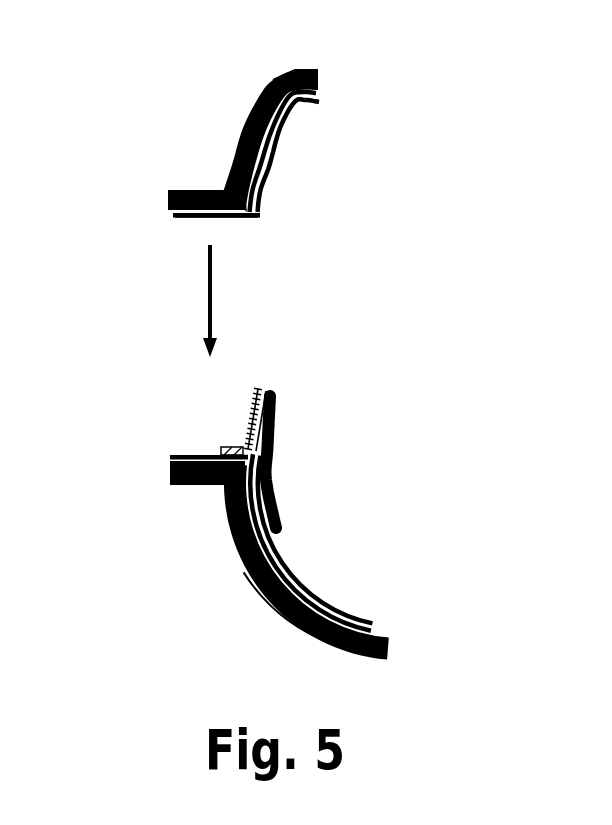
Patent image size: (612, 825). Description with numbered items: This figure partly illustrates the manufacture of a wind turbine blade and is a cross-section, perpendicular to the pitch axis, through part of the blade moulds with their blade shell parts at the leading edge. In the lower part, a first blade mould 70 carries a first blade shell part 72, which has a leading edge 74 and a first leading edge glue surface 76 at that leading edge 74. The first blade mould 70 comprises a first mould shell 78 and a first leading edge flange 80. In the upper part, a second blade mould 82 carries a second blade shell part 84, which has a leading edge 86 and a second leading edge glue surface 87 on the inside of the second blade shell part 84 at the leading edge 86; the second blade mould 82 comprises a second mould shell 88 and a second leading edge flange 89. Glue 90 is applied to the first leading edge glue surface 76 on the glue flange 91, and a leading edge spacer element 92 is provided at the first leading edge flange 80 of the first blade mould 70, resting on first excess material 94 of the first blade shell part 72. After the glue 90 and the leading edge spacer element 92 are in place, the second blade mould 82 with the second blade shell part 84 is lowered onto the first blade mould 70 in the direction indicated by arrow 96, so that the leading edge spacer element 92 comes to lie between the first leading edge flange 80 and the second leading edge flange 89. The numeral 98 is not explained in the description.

The first blade mould 70 is at (248, 575).
The first blade shell part 72 is at (299, 592).
The leading edge 74 is at (243, 449).
The first leading edge glue surface 76 is at (261, 392).
The first mould shell 78 is at (312, 639).
The first leading edge flange 80 is at (184, 487).
The second blade mould 82 is at (246, 124).
The second blade shell part 84 is at (270, 140).
The leading edge 86 is at (257, 216).
The second leading edge glue surface 87 is at (262, 186).
The second mould shell 88 is at (291, 78).
The second leading edge flange 89 is at (173, 190).
The glue 90 is at (251, 452).
The glue flange 91 is at (279, 417).
The leading edge spacer element 92 is at (228, 454).
The first excess material 94 is at (188, 456).
The arrow 96 is at (206, 305).
The bottom surface 98 is at (217, 216).